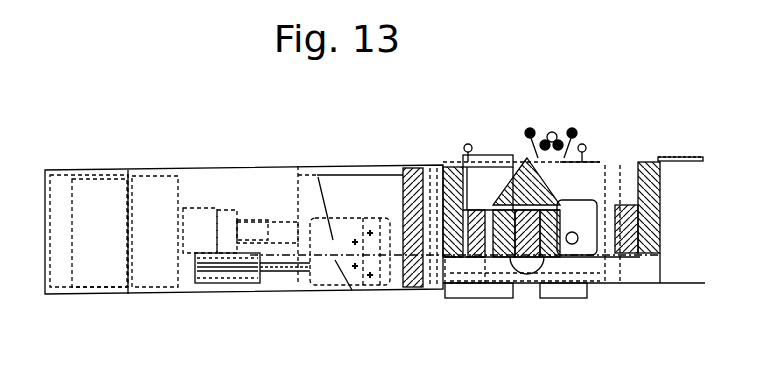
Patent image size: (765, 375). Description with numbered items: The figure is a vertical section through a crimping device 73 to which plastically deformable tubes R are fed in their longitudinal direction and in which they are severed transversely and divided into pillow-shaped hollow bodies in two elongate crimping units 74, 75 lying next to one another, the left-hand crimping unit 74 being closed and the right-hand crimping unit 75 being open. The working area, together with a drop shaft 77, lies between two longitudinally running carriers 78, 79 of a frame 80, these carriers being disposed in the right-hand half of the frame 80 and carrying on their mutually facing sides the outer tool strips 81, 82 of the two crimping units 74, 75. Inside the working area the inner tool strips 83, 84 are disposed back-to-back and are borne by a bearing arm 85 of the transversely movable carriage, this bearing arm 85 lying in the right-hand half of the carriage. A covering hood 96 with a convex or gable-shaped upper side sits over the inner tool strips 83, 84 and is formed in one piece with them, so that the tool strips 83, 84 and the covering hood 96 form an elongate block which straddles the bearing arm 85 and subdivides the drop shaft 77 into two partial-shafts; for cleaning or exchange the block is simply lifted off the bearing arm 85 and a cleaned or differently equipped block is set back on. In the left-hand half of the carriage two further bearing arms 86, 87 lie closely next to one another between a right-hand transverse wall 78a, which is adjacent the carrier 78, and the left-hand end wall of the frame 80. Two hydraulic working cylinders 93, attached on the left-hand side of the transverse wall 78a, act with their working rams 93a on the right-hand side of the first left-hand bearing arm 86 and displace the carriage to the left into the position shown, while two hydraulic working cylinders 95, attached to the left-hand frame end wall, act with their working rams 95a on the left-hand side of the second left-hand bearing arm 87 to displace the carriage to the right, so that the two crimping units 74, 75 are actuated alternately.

The crimping device 73 is at (673, 132).
The crimping unit 74 is at (487, 128).
The crimping unit 75 is at (606, 124).
The drop shaft 77 is at (496, 185).
The carrier 78 is at (452, 165).
The right-hand transverse wall 78a is at (415, 185).
The carrier 79 is at (643, 180).
The frame 80 is at (697, 160).
The outer tool strip 81 is at (463, 280).
The outer tool strip 82 is at (631, 285).
The inner tool strip 83 is at (500, 265).
The inner tool strip 84 is at (556, 265).
The bearing arm 85 is at (528, 280).
The bearing arm 86 is at (226, 210).
The bearing arm 87 is at (190, 200).
The hydraulic working cylinder 93 is at (305, 215).
The working ram 93a is at (272, 235).
The hydraulic working cylinder 95 is at (100, 265).
The working ram 95a is at (183, 233).
The covering hood 96 is at (593, 158).
The plastically deformable tube R is at (551, 130).